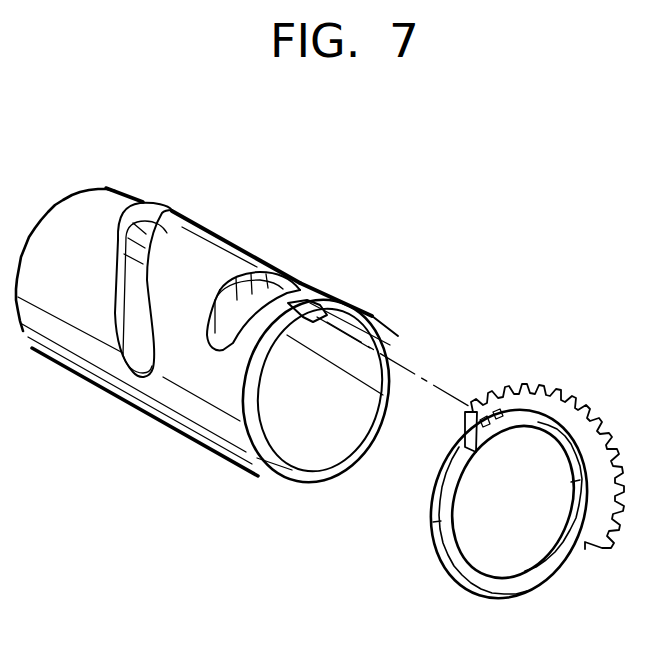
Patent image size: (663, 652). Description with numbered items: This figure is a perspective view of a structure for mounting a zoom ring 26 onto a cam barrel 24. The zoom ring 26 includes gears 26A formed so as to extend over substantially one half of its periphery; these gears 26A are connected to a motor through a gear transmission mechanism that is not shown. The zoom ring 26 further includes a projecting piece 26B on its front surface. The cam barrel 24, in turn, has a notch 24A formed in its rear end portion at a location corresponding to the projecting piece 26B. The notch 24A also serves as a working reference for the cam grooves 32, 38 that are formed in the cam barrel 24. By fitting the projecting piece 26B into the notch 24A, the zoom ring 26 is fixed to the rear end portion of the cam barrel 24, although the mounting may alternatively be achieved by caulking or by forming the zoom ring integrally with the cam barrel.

The cam barrel 24 is at (188, 252).
The notch 24A is at (315, 322).
The cam groove 32 is at (122, 233).
The cam groove 38 is at (267, 273).
The zoom ring 26 is at (515, 449).
The gears 26A is at (507, 397).
The projecting piece 26B is at (473, 408).